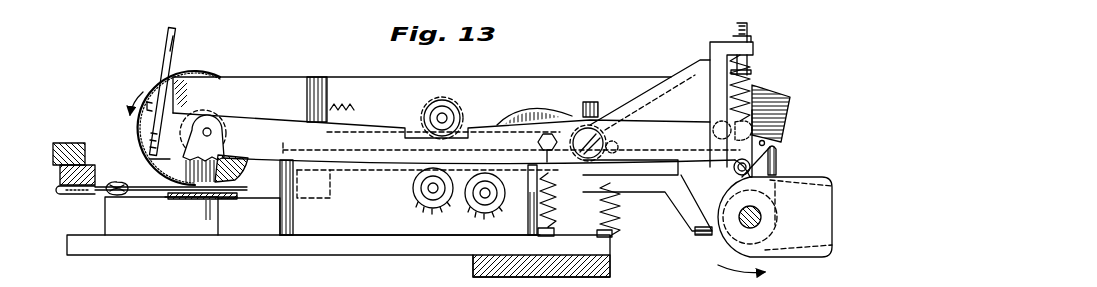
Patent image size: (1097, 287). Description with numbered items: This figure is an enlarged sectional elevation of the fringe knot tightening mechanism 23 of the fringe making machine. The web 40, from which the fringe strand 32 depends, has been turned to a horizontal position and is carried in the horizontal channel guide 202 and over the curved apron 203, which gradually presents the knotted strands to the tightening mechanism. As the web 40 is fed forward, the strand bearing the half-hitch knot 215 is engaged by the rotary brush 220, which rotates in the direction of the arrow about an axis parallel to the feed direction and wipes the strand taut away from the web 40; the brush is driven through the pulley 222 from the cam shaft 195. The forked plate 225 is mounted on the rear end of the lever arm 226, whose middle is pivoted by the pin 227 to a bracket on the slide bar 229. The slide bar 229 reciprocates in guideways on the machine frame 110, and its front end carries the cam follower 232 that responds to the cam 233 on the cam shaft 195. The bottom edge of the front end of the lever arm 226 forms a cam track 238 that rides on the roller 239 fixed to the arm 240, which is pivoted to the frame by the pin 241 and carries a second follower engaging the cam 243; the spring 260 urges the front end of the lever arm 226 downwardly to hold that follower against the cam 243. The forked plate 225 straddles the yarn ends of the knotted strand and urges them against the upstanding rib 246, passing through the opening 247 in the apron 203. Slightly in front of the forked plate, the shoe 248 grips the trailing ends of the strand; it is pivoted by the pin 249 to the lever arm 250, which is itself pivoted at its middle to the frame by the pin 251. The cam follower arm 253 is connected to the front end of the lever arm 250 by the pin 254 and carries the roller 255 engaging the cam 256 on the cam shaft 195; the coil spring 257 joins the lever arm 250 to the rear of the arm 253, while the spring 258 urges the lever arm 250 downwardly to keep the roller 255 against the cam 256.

The fringe knot tightening mechanism 23 is at (85, 71).
The forked plate 225 is at (170, 31).
The rotary brush 220 is at (198, 72).
The pin 249 is at (208, 128).
The lever arm 250 is at (264, 147).
The shoe 248 is at (240, 178).
The half-hitch knot 215 is at (117, 182).
The channel guide 202 is at (57, 188).
The web 40 is at (66, 190).
The rib 246 is at (138, 223).
The opening 247 is at (166, 198).
The curved apron 203 is at (182, 199).
The fringe strand 32 is at (241, 216).
The pulley 222 is at (338, 261).
The machine frame 110 is at (371, 246).
The lever arm 226 is at (398, 108).
The pin 227 is at (444, 118).
The arm 240 is at (552, 105).
The pin 254 is at (590, 128).
The cam follower 239 is at (693, 111).
The coil spring 257 is at (742, 82).
The cam track 238 is at (786, 116).
The cam 233 is at (778, 156).
The cam follower arm 253 is at (662, 150).
The cam follower 255 is at (734, 168).
The pin 251 is at (432, 188).
The pin 241 is at (484, 194).
The spring 258 is at (540, 204).
The spring 260 is at (600, 207).
The slide bar 229 is at (648, 175).
The cam follower 232 is at (705, 238).
The cam shaft 195 is at (762, 217).
The cam 256 is at (817, 242).
The cam 243 is at (796, 262).